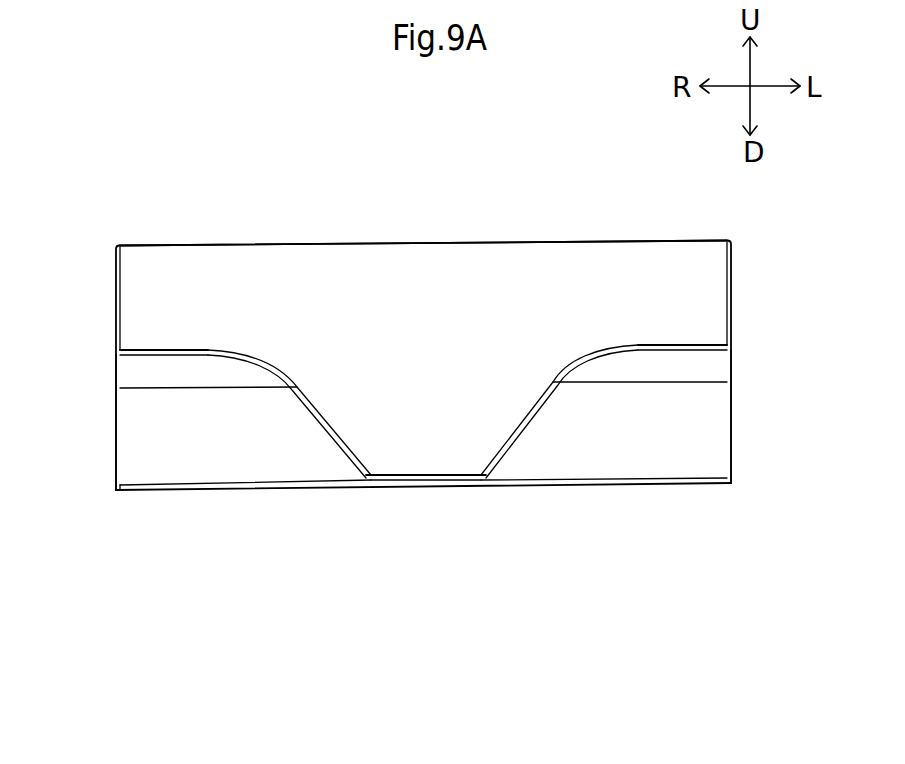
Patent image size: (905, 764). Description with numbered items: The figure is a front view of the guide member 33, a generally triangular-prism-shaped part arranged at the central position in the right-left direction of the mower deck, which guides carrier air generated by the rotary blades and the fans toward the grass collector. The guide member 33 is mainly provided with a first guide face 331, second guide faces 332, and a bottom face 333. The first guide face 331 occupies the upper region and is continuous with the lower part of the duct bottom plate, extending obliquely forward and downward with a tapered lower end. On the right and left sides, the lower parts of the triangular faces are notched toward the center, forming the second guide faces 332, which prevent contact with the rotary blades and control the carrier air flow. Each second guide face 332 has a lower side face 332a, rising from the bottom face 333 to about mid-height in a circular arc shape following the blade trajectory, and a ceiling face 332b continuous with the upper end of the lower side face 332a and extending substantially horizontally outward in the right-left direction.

The guide member 33 is at (597, 175).
The first guide face 331 is at (445, 287).
The second guide face 332 is at (112, 410).
The lower side face 332a is at (213, 463).
The ceiling face 332b is at (172, 358).
The bottom face 333 is at (455, 488).